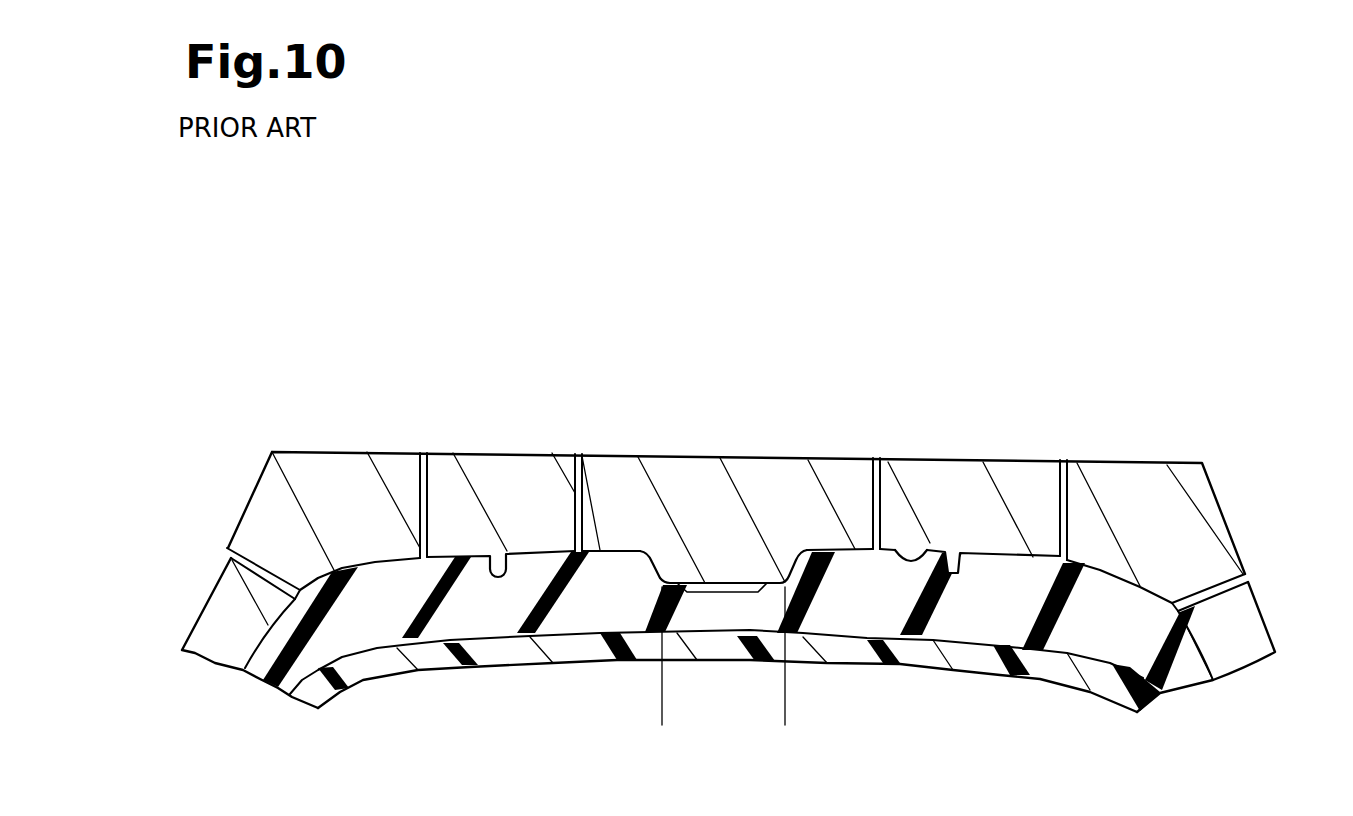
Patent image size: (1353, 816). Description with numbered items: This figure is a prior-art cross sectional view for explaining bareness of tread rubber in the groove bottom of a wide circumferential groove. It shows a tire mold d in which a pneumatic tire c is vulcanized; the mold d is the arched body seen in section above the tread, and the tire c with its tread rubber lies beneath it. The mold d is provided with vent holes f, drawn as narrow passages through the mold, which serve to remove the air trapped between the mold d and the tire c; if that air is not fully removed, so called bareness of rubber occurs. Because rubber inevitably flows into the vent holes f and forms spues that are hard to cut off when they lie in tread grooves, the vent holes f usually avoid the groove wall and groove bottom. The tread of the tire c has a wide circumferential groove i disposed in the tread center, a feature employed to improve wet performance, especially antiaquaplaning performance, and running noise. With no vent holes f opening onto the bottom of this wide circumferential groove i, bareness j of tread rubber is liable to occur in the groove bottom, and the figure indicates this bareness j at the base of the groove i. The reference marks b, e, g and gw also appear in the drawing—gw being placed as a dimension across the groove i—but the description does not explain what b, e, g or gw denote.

The belt layer b is at (527, 657).
The tire c is at (598, 622).
The tire mold d is at (702, 457).
The sipe e is at (927, 550).
The vent holes f is at (257, 558).
The tread surface g is at (628, 545).
The wide circumferential groove i is at (772, 583).
The bareness j is at (733, 590).
The groove width gw is at (785, 715).